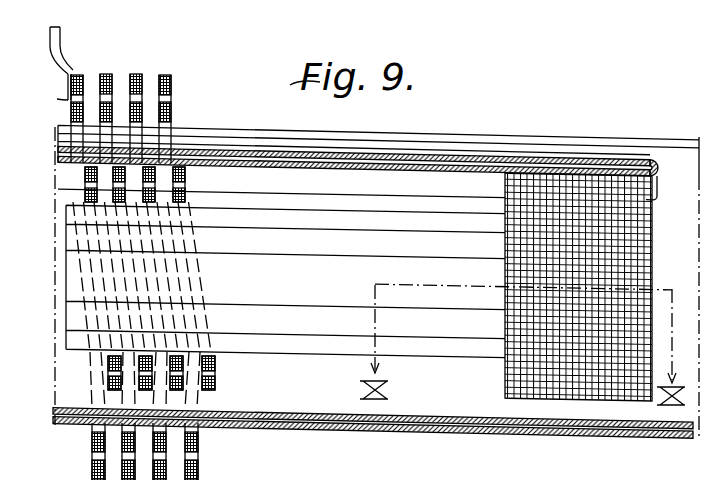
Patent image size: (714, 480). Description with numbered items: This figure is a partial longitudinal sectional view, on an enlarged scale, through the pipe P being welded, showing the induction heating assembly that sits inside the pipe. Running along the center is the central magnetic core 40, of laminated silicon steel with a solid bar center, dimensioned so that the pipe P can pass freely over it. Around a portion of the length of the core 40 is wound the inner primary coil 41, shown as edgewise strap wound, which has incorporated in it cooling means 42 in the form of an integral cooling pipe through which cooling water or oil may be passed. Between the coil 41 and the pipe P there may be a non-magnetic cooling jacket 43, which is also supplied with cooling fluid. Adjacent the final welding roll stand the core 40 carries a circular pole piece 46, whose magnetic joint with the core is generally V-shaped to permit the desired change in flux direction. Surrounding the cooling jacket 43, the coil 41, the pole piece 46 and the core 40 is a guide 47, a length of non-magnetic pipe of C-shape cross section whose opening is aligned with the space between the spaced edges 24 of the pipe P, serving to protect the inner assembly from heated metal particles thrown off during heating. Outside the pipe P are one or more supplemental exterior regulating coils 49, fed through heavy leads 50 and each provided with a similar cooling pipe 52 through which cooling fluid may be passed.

The spaced edges 24 is at (228, 133).
The guide 47 is at (297, 146).
The pipe P is at (393, 139).
The non-magnetic cooling jacket 43 is at (455, 158).
The central magnetic core 40 is at (330, 220).
The circular pole piece 46 is at (515, 377).
The supplemental exterior regulating coil 49 is at (84, 80).
The heavy leads 50 is at (50, 42).
The cooling pipe 52 is at (57, 99).
The cooling means 42 is at (86, 180).
The coil 41 is at (186, 171).